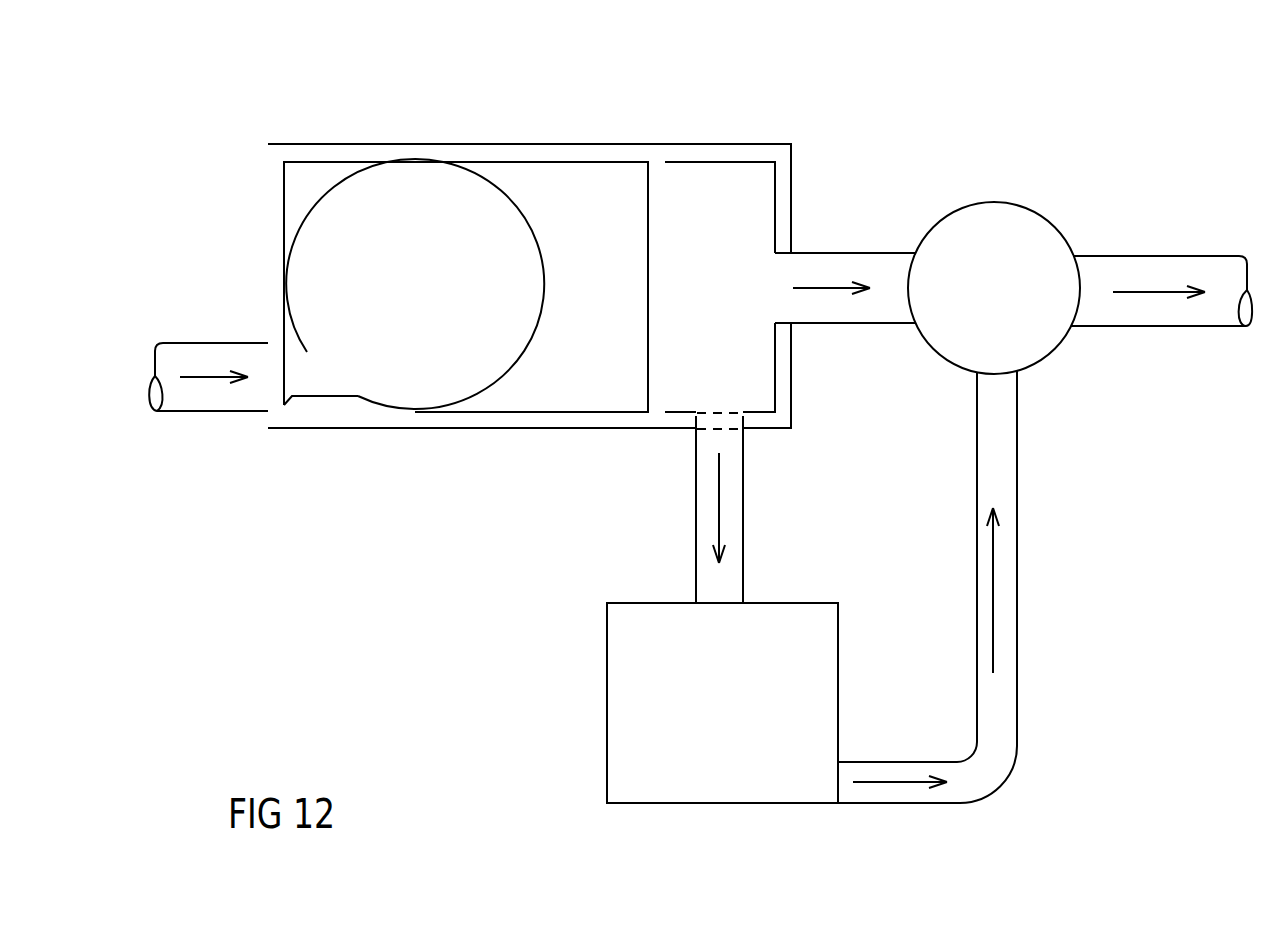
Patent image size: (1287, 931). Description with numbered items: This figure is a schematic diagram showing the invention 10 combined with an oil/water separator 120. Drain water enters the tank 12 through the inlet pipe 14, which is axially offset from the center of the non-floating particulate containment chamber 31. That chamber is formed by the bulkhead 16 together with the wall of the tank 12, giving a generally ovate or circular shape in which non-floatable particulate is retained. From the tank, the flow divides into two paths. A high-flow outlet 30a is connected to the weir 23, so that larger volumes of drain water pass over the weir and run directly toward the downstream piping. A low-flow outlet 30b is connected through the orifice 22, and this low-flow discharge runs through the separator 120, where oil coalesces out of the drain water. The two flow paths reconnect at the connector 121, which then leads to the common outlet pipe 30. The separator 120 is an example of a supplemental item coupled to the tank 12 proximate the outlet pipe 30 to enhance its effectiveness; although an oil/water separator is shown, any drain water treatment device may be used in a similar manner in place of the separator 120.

The invention 10 is at (340, 61).
The tank 12 is at (353, 143).
The inlet pipe 14 is at (222, 343).
The bulkhead 16 is at (517, 206).
The orifice plate 22 is at (744, 421).
The weir plate 23 is at (771, 277).
The outlet pipe 30 is at (1140, 257).
The high-flow outlet 30a is at (895, 324).
The low-flow outlet 30b is at (696, 520).
The non-floating particulate containment chamber 31 is at (433, 302).
The oil/water separator 120 is at (733, 730).
The connector 121 is at (1018, 307).